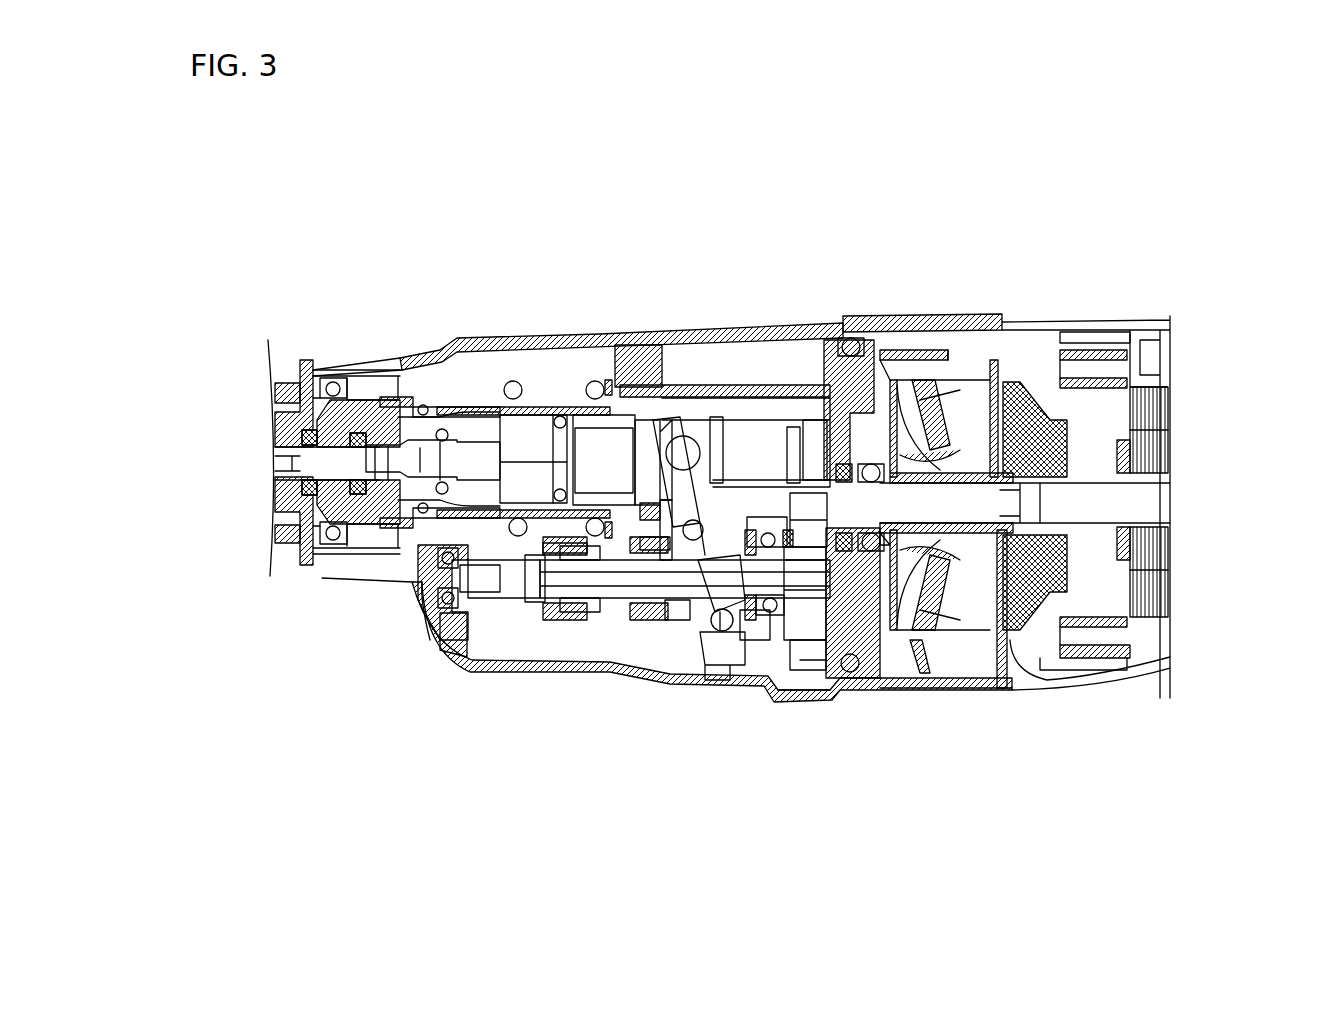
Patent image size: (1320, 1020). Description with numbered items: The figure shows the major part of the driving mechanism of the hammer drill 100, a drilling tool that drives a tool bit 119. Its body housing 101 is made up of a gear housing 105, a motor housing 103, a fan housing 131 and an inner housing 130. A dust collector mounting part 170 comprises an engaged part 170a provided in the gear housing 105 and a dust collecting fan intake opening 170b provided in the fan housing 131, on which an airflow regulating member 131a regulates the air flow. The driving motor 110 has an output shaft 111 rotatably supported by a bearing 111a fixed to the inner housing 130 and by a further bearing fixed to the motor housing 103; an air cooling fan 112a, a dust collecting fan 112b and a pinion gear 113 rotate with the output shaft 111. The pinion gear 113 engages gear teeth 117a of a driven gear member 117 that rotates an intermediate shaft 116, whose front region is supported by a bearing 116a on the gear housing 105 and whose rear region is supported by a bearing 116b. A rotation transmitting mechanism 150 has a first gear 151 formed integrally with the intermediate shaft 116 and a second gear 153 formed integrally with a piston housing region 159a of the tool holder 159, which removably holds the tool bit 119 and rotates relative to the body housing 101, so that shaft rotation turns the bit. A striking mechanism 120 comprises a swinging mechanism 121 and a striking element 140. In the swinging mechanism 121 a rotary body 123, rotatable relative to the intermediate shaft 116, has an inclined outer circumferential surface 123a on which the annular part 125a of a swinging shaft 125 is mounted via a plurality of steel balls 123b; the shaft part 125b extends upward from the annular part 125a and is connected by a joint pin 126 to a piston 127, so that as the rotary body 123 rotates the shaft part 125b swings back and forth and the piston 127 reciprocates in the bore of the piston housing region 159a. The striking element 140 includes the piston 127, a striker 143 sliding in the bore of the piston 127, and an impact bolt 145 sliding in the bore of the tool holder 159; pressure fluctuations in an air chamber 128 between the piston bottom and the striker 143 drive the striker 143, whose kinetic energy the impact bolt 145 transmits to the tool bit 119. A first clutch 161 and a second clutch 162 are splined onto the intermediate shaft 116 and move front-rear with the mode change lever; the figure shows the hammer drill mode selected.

The hammer drill 100 is at (310, 228).
The body housing 101 is at (322, 352).
The motor housing 103 is at (1112, 322).
The gear housing 105 is at (645, 390).
The driving motor 110 is at (1153, 418).
The output shaft 111 is at (1160, 493).
The bearing 111a is at (906, 440).
The air cooling fan 112a is at (1032, 395).
The dust collecting fan 112b is at (932, 425).
The pinion gear 113 is at (818, 487).
The intermediate shaft 116 is at (417, 598).
The bearing 116a is at (430, 648).
The bearing 116b is at (772, 650).
The driven gear member 117 is at (800, 640).
The gear teeth 117a is at (858, 700).
The tool bit 119 is at (272, 493).
The striking mechanism 120 is at (706, 520).
The swinging mechanism 121 is at (688, 627).
The rotary body 123 is at (690, 605).
The outer circumferential surface 123a is at (714, 535).
The steel balls 123b is at (745, 640).
The swinging shaft 125 is at (745, 600).
The annular part 125a is at (802, 495).
The shaft part 125b is at (706, 410).
The joint pin 126 is at (668, 390).
The piston 127 is at (560, 410).
The air chamber 128 is at (605, 443).
The inner housing 130 is at (875, 463).
The fan housing 131 is at (1003, 640).
The airflow regulating member 131a is at (927, 660).
The striking element 140 is at (480, 436).
The striker 143 is at (530, 437).
The impact bolt 145 is at (416, 468).
The rotation transmitting mechanism 150 is at (508, 627).
The first gear 151 is at (457, 667).
The second gear 153 is at (407, 573).
The tool holder 159 is at (297, 420).
The piston housing region 159a is at (552, 405).
The first clutch 161 is at (580, 627).
The second clutch 162 is at (627, 620).
The dust collector mounting part 170 is at (918, 727).
The engaged part 170a is at (808, 702).
The dust collecting fan intake opening 170b is at (970, 683).